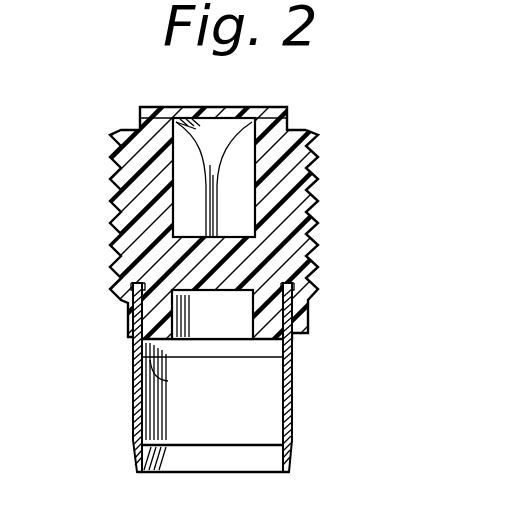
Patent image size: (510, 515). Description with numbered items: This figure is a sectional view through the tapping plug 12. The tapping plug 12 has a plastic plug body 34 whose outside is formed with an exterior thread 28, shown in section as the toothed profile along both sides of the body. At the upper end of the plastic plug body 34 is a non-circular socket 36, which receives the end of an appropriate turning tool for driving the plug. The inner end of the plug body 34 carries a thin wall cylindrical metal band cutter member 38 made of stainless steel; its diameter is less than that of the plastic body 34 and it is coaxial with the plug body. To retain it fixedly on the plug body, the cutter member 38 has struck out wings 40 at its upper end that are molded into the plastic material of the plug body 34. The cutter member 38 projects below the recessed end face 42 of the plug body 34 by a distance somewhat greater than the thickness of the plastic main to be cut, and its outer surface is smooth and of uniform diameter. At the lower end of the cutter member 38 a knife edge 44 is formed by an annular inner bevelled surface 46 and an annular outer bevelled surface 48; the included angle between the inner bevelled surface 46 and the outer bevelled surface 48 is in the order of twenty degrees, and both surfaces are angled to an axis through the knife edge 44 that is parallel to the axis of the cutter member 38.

The tapping plug 12 is at (100, 252).
The exterior thread 28 is at (318, 180).
The plastic plug body 34 is at (297, 118).
The non-circular socket 36 is at (205, 124).
The cutter member 38 is at (293, 388).
The struck out wings 40 is at (176, 268).
The recessed end face 42 is at (168, 381).
The knife edge 44 is at (288, 466).
The annular inner bevelled surface 46 is at (161, 473).
The annular outer bevelled surface 48 is at (140, 452).